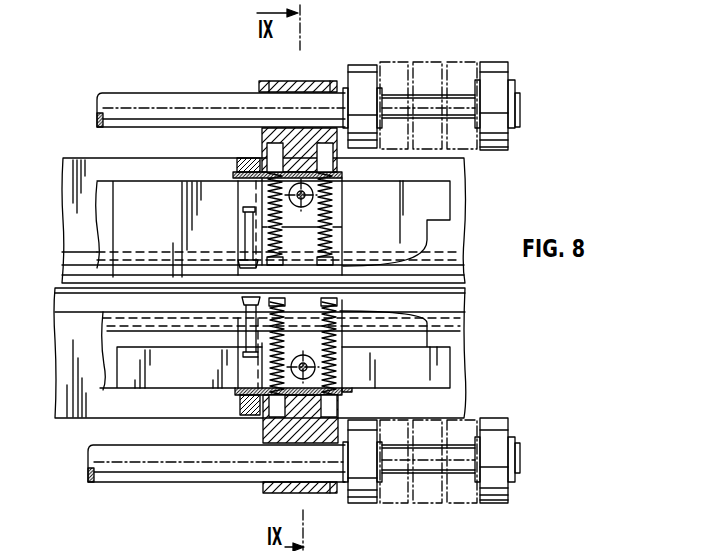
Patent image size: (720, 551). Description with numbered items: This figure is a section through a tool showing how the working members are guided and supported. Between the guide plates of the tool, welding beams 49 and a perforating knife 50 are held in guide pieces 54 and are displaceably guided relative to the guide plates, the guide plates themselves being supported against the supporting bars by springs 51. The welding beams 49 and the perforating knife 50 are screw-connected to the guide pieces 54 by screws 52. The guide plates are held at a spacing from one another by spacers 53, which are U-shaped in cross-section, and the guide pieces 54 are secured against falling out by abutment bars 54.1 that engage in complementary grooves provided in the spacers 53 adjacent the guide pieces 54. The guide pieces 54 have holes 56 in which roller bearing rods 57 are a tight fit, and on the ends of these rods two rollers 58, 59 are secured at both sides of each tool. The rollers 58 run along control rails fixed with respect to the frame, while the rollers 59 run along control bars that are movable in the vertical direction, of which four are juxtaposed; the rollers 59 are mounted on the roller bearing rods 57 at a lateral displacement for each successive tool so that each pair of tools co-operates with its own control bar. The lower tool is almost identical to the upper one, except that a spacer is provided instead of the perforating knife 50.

The welding beam 49 is at (103, 218).
The perforating knife 50 is at (164, 220).
The spring 51 is at (308, 249).
The screw 52 is at (310, 198).
The spacer 53 is at (257, 157).
The guide piece 54 is at (298, 82).
The abutment bar 54.1 is at (342, 178).
The hole 56 is at (270, 82).
The roller bearing rod 57 is at (202, 103).
The roller 58 is at (362, 80).
The roller 59 is at (493, 72).